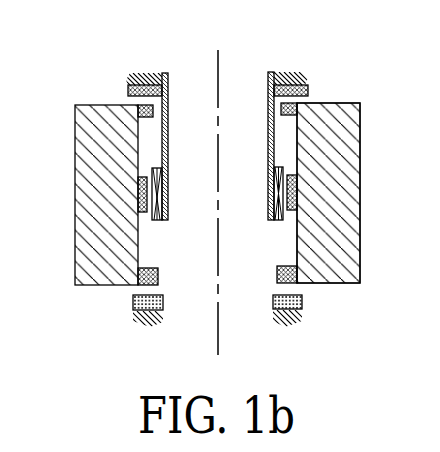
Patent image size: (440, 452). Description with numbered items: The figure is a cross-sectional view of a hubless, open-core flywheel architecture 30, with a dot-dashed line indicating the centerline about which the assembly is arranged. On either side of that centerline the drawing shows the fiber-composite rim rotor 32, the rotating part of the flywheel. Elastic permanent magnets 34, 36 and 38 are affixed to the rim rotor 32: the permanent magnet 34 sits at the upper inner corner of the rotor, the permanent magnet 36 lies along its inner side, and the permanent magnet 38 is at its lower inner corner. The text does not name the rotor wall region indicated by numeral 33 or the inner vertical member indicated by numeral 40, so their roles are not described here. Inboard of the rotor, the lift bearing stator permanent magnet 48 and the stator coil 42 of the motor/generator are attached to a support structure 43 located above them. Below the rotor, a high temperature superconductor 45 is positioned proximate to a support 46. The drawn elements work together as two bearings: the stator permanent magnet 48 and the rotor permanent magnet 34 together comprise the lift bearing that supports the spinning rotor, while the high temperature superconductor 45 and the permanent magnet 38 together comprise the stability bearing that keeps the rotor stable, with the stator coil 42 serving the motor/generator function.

The flywheel architecture 30 is at (400, 73).
The fiber-composite rim rotor 32 is at (343, 186).
The barrel wall 33 is at (133, 149).
The elastic permanent magnet 34 is at (138, 116).
The elastic permanent magnet 36 is at (138, 185).
The elastic permanent magnet 38 is at (138, 270).
The sleeve 40 is at (268, 133).
The stator coil 42 is at (155, 168).
The support structure 43 is at (141, 76).
The high temperature superconductor 45 is at (302, 300).
The support 46 is at (292, 320).
The lift bearing stator permanent magnet 48 is at (128, 91).